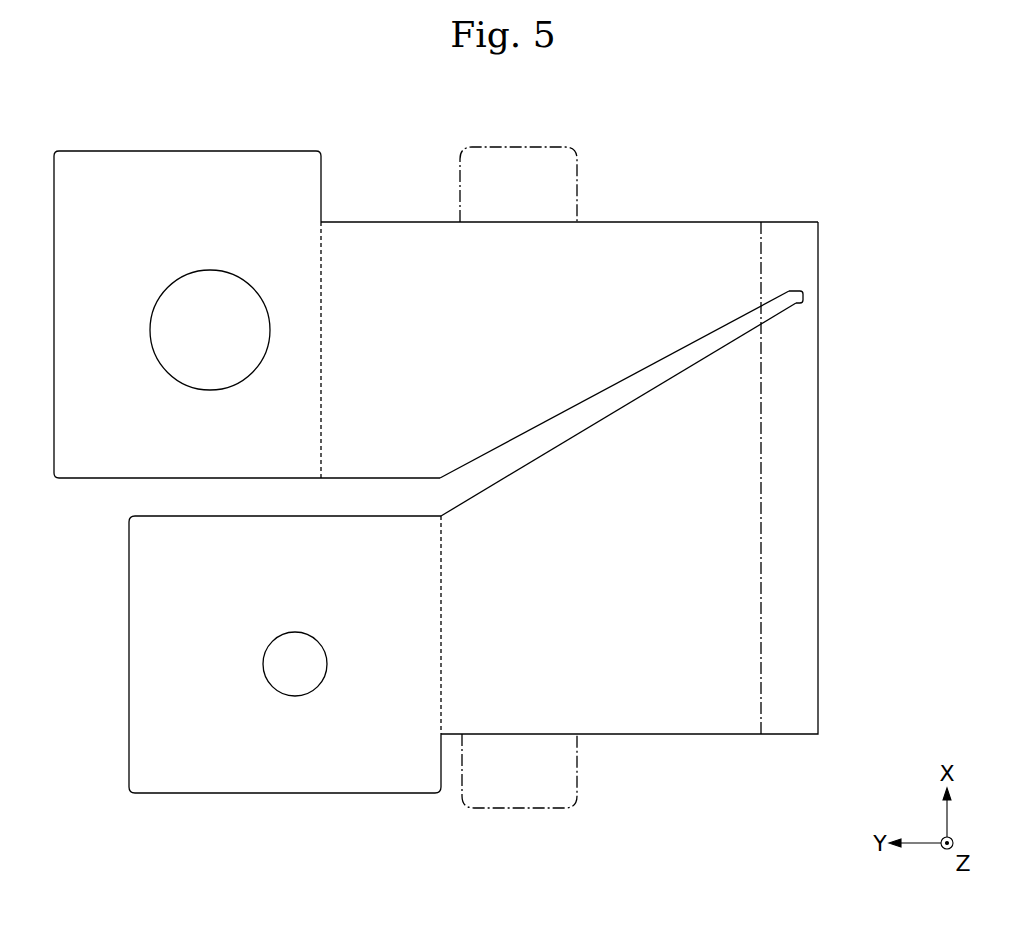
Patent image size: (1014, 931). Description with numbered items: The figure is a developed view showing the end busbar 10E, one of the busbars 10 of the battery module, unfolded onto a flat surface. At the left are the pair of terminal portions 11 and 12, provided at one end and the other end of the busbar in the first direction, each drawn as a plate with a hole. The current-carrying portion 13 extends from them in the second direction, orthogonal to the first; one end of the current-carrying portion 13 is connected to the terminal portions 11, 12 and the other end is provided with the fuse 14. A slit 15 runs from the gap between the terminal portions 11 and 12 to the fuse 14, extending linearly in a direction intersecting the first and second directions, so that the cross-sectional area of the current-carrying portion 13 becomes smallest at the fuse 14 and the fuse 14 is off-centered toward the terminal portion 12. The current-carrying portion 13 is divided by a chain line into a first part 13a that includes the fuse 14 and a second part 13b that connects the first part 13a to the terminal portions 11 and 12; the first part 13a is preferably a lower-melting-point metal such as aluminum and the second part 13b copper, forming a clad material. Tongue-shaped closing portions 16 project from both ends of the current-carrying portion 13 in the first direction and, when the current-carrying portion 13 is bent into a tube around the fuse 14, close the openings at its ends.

The end busbar 10E is at (663, 155).
The busbar 10 is at (484, 479).
The terminal portion 11 is at (304, 795).
The terminal portion 12 is at (213, 150).
The current-carrying portion 13 is at (818, 493).
The first part 13a is at (789, 736).
The second part 13b is at (669, 736).
The fuse 14 is at (808, 295).
The slit 15 is at (697, 342).
The closing portion 16 is at (543, 143).